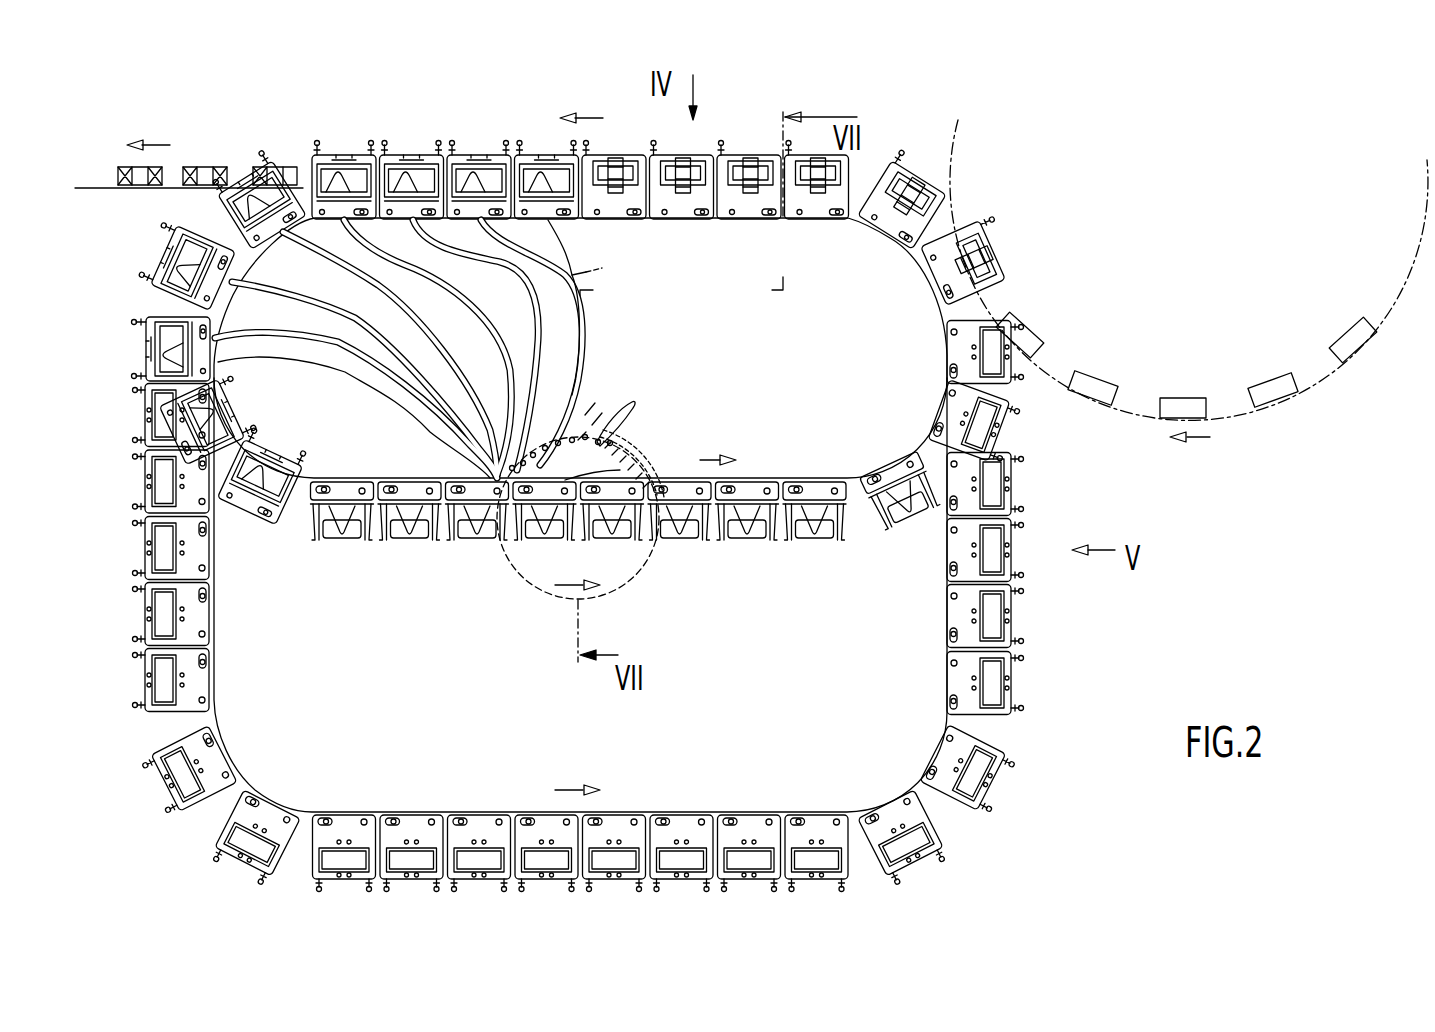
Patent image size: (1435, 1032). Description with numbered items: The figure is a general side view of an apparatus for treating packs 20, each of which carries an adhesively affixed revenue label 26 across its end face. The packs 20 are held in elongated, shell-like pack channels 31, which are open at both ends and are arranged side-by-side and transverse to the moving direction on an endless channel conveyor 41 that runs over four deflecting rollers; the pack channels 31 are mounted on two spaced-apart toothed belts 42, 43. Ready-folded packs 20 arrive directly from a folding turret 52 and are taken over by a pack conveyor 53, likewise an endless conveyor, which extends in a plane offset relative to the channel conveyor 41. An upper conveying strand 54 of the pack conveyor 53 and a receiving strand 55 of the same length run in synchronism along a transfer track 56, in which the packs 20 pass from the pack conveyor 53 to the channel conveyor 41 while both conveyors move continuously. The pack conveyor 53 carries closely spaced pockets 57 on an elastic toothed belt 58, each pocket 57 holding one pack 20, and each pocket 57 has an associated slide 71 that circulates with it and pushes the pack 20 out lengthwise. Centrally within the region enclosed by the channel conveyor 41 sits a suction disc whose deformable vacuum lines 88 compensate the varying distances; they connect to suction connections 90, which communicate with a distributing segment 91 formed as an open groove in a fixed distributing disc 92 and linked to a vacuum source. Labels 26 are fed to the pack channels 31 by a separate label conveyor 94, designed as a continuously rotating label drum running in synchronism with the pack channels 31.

The pack 20 is at (192, 167).
The label 26 is at (743, 157).
The pack channel 31 is at (402, 853).
The channel conveyor 41 is at (752, 790).
The toothed belt 42 is at (236, 526).
The toothed belt 43 is at (218, 722).
The folding turret 52 is at (1130, 395).
The pack conveyor 53 is at (805, 548).
The upper conveying strand 54 is at (707, 233).
The receiving strand 55 is at (820, 144).
The transfer track 56 is at (388, 130).
The pocket 57 is at (845, 520).
The toothed belt 58 is at (313, 477).
The slide 71 is at (430, 540).
The vacuum line 88 is at (497, 390).
The suction connection 90 is at (618, 410).
The distributing segment 91 is at (600, 470).
The distributing disc 92 is at (605, 450).
The label conveyor 94 is at (1050, 628).